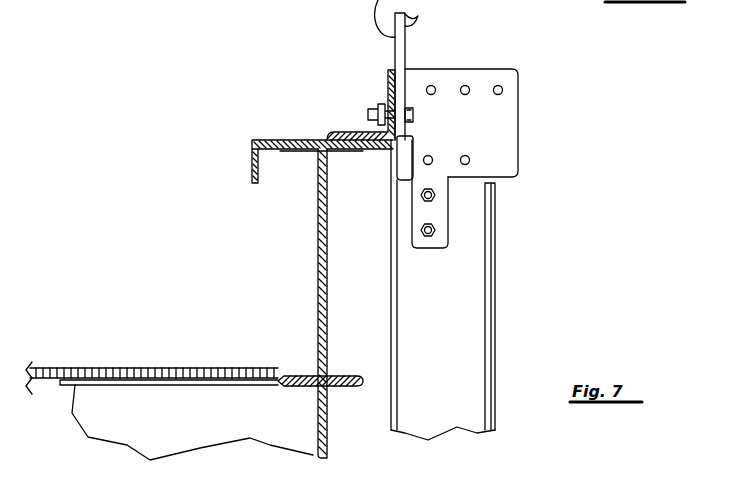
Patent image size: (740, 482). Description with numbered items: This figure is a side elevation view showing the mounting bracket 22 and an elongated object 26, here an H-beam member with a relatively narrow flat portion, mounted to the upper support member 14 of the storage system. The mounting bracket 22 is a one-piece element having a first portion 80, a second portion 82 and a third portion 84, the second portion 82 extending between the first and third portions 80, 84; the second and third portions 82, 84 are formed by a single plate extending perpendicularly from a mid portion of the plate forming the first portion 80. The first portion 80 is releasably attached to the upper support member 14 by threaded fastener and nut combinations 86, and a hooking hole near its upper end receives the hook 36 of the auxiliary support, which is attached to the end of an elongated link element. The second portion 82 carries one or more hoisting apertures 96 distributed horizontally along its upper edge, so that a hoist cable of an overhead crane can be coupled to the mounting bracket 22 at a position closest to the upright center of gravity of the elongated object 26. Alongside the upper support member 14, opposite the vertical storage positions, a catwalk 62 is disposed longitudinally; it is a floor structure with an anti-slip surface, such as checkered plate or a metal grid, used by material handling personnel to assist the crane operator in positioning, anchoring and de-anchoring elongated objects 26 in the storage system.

The upper support member 14 is at (291, 133).
The mounting bracket 22 is at (484, 124).
The elongated object 26 is at (500, 290).
The hook 36 is at (378, 25).
The catwalk 62 is at (165, 367).
The first portion 80 is at (400, 52).
The second portion 82 is at (484, 88).
The third portion 84 is at (437, 212).
The threaded fastener and nut combinations 86 is at (413, 118).
The hoisting apertures 96 is at (501, 88).